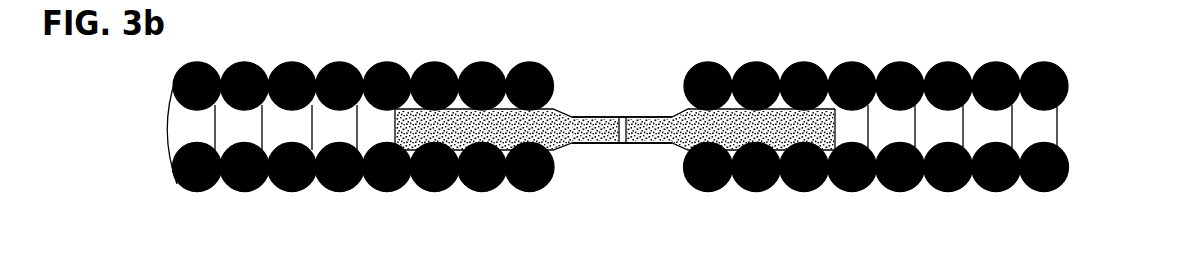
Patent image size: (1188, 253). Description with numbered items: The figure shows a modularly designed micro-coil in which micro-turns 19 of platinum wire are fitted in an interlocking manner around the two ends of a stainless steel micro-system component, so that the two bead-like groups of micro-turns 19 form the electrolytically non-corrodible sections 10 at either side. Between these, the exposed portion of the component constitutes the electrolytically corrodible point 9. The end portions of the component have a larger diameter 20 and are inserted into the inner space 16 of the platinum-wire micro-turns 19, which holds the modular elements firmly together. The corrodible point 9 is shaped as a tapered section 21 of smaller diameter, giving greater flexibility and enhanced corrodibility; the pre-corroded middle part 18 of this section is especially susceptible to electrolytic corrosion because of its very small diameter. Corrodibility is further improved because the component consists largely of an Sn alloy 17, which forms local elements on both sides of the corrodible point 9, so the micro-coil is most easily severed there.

The electrolytically corrodible point 9 is at (693, 32).
The electrolytically non-corrodible sections 10 is at (340, 60).
The inner space 16 is at (1062, 120).
The Sn alloy 17 is at (460, 128).
The pre-corroded middle part 18 is at (622, 117).
The micro-turns 19 is at (1063, 66).
The larger diameter 20 is at (615, 132).
The tapered section 21 is at (660, 152).